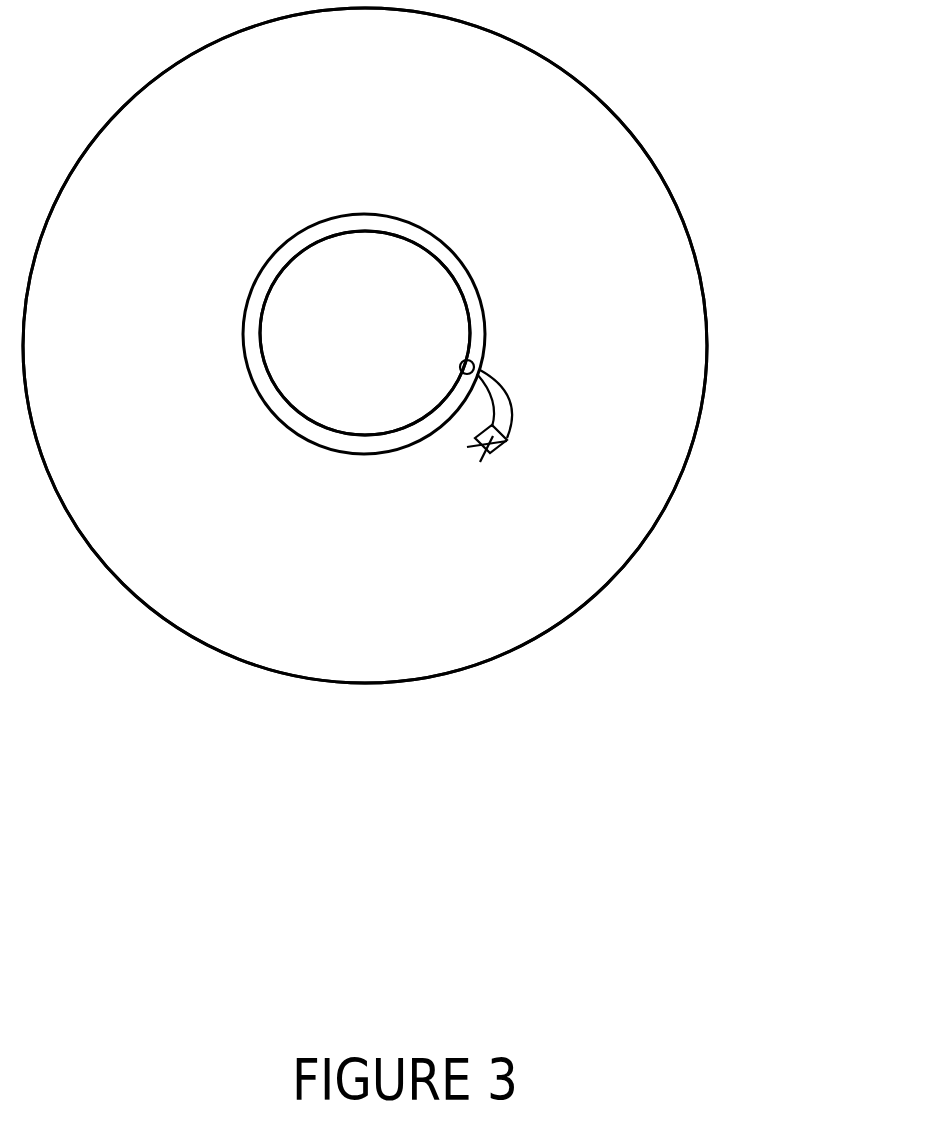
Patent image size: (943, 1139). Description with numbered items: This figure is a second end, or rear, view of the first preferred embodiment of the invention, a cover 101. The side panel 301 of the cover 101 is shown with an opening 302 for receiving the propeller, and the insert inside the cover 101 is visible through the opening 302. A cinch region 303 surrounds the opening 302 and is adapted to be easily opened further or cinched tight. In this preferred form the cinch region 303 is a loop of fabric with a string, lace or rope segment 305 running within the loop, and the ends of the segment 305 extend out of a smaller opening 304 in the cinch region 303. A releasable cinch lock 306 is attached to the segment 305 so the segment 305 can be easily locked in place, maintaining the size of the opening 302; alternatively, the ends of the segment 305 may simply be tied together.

The cover 101 is at (623, 176).
The side panel 301 is at (543, 117).
The opening 302 is at (415, 298).
The cinch region 303 is at (375, 445).
The opening in the cinch region 304 is at (474, 363).
The string, lace or rope segment 305 is at (520, 404).
The releasable cinch lock 306 is at (500, 450).